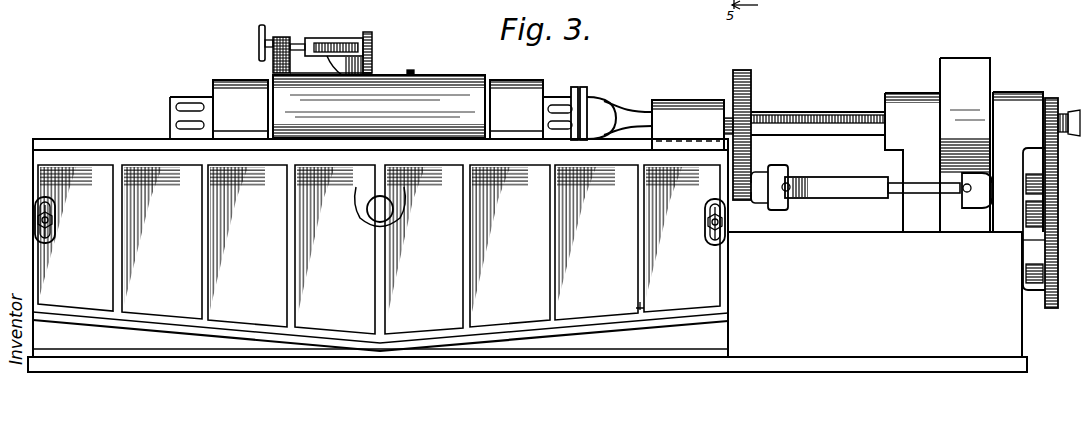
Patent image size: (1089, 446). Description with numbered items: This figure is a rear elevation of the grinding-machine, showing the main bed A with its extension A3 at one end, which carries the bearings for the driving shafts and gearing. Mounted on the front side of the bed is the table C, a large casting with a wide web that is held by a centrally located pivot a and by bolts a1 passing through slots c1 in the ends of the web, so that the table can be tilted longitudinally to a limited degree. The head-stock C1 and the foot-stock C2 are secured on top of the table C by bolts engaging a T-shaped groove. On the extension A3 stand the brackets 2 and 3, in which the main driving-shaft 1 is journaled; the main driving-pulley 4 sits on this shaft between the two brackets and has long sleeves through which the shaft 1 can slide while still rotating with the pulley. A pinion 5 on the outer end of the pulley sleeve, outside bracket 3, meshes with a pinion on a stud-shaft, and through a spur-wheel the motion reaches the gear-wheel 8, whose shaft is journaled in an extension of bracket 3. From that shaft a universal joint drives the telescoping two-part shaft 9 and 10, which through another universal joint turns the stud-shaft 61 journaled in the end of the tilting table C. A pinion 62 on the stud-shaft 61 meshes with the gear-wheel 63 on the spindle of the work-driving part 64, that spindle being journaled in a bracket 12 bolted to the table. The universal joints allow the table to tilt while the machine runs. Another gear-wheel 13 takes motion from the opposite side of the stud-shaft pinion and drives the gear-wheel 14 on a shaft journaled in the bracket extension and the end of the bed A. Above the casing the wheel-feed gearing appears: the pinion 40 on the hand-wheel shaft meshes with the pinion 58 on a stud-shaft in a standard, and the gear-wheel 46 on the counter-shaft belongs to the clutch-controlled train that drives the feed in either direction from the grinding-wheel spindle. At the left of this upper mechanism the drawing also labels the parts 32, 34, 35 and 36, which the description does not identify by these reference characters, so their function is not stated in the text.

The table C is at (147, 158).
The head-stock C1 is at (531, 109).
The foot-stock C2 is at (219, 109).
The main bed A is at (379, 106).
The extension A3 is at (875, 294).
The pivot a is at (377, 216).
The bolts a1 is at (37, 221).
The slots c1 is at (34, 207).
The main driving-shaft 1 is at (811, 127).
The bracket 2 is at (912, 162).
The bracket 3 is at (1018, 162).
The main driving-pulley 4 is at (965, 145).
The pinion 5 is at (1051, 98).
The gear-wheel 8 is at (1046, 184).
The two-part shaft 9 is at (899, 194).
The two-part shaft 10 is at (847, 194).
The bracket 12 is at (692, 125).
The gear-wheel 13 is at (1046, 234).
The gear-wheel 14 is at (1046, 273).
The cylinder 32 is at (340, 40).
The block 34 is at (297, 43).
The wedge 35 is at (327, 57).
The hand wheel 36 is at (259, 30).
The pinion 40 is at (372, 40).
The gear-wheel 46 is at (412, 72).
The pinion 58 is at (378, 72).
The stud-shaft 61 is at (757, 180).
The pinion 62 is at (768, 202).
The gear-wheel 63 is at (752, 92).
The work-driving part 64 is at (588, 96).